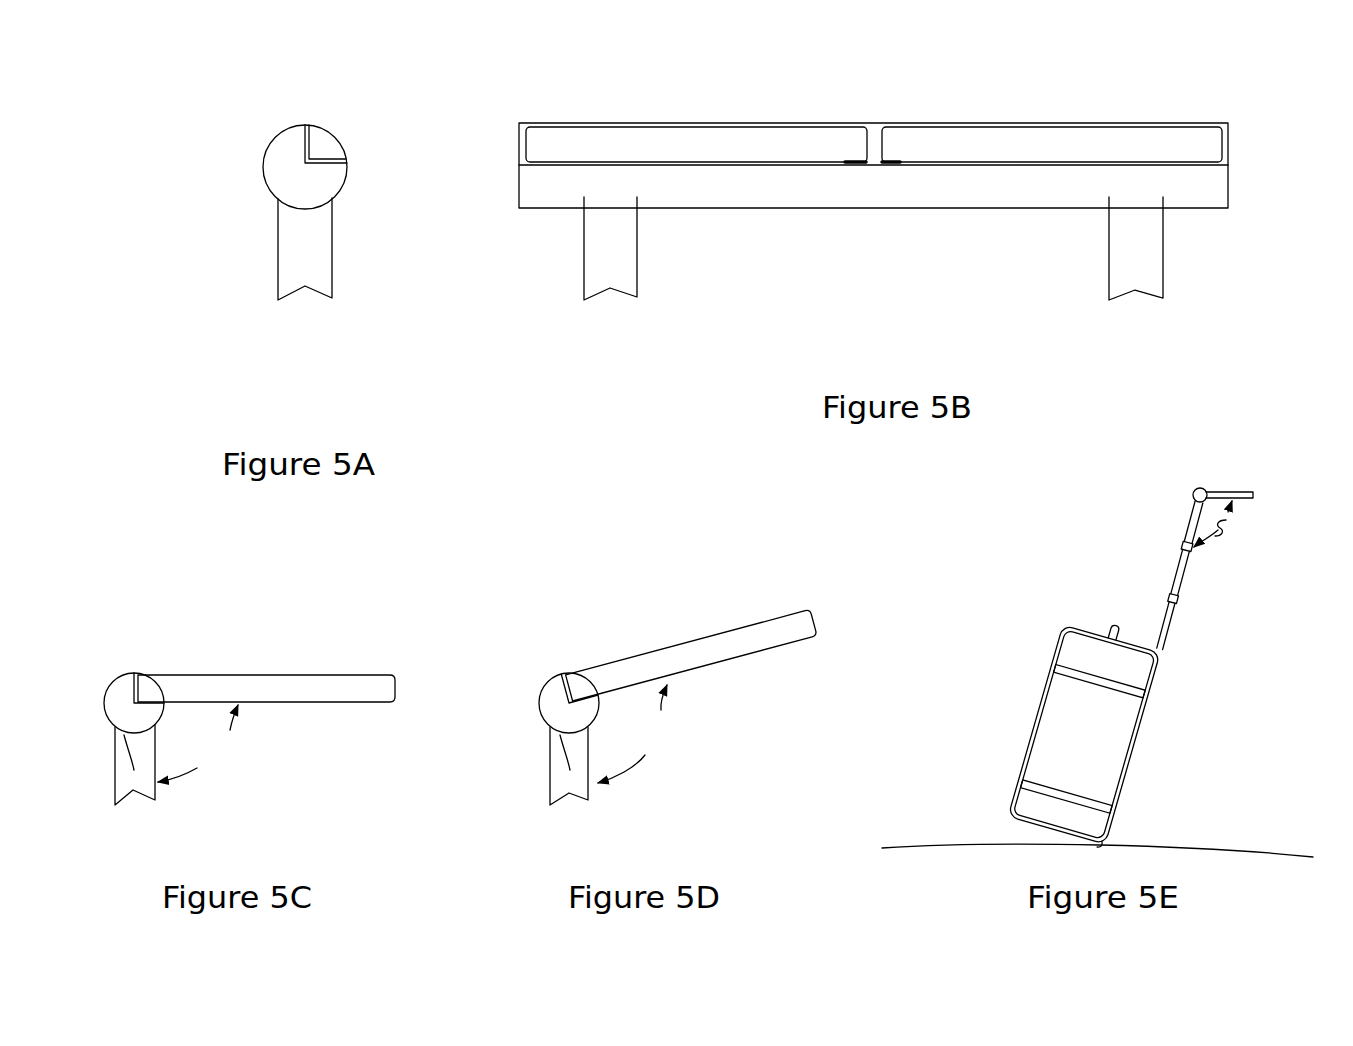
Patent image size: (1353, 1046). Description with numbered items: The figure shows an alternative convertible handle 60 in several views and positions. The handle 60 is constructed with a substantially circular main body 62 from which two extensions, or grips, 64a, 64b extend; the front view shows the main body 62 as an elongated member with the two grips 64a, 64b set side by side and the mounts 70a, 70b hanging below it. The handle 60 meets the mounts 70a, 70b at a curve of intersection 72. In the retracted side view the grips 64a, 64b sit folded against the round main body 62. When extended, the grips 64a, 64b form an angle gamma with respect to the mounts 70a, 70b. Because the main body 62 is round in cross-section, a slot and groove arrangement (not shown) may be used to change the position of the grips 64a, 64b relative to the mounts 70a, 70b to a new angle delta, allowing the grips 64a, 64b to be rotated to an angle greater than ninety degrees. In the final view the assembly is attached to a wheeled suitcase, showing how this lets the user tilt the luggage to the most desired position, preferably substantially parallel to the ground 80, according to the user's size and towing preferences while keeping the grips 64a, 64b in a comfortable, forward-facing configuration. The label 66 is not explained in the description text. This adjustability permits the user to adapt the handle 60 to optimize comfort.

In FIG. 5A, the handle 60 is at (228, 199).
In FIG. 5B, the handle 60 is at (798, 247).
In FIG. 5C, the handle 60 is at (168, 620).
In FIG. 5D, the handle 60 is at (547, 650).
In FIG. 5A, the main body 62 is at (282, 163).
In FIG. 5B, the main body 62 is at (530, 193).
In FIG. 5A, the extension 64a is at (325, 145).
In FIG. 5B, the extension 64a is at (692, 145).
In FIG. 5D, the extension 64a is at (783, 628).
In FIG. 5E, the extension 64a is at (1222, 492).
In FIG. 5A, the extension 64b is at (397, 105).
In FIG. 5B, the extension 64b is at (945, 145).
In FIG. 5D, the extension 64b is at (744, 625).
In FIG. 5E, the extension 64b is at (1276, 452).
In FIG. 5E, the handle 66 is at (1178, 484).
In FIG. 5A, the mount 70a is at (303, 286).
In FIG. 5B, the mount 70a is at (600, 290).
In FIG. 5C, the mount 70a is at (131, 792).
In FIG. 5D, the mount 70a is at (582, 789).
In FIG. 5E, the mount 70a is at (1173, 572).
In FIG. 5A, the mount 70b is at (341, 279).
In FIG. 5B, the mount 70b is at (1130, 292).
In FIG. 5C, the mount 70b is at (182, 787).
In FIG. 5D, the mount 70b is at (641, 787).
In FIG. 5E, the mount 70b is at (1146, 575).
In FIG. 5C, the curve of intersection 72 is at (130, 735).
In FIG. 5D, the curve of intersection 72 is at (568, 735).
In FIG. 5E, the ground 80 is at (920, 845).